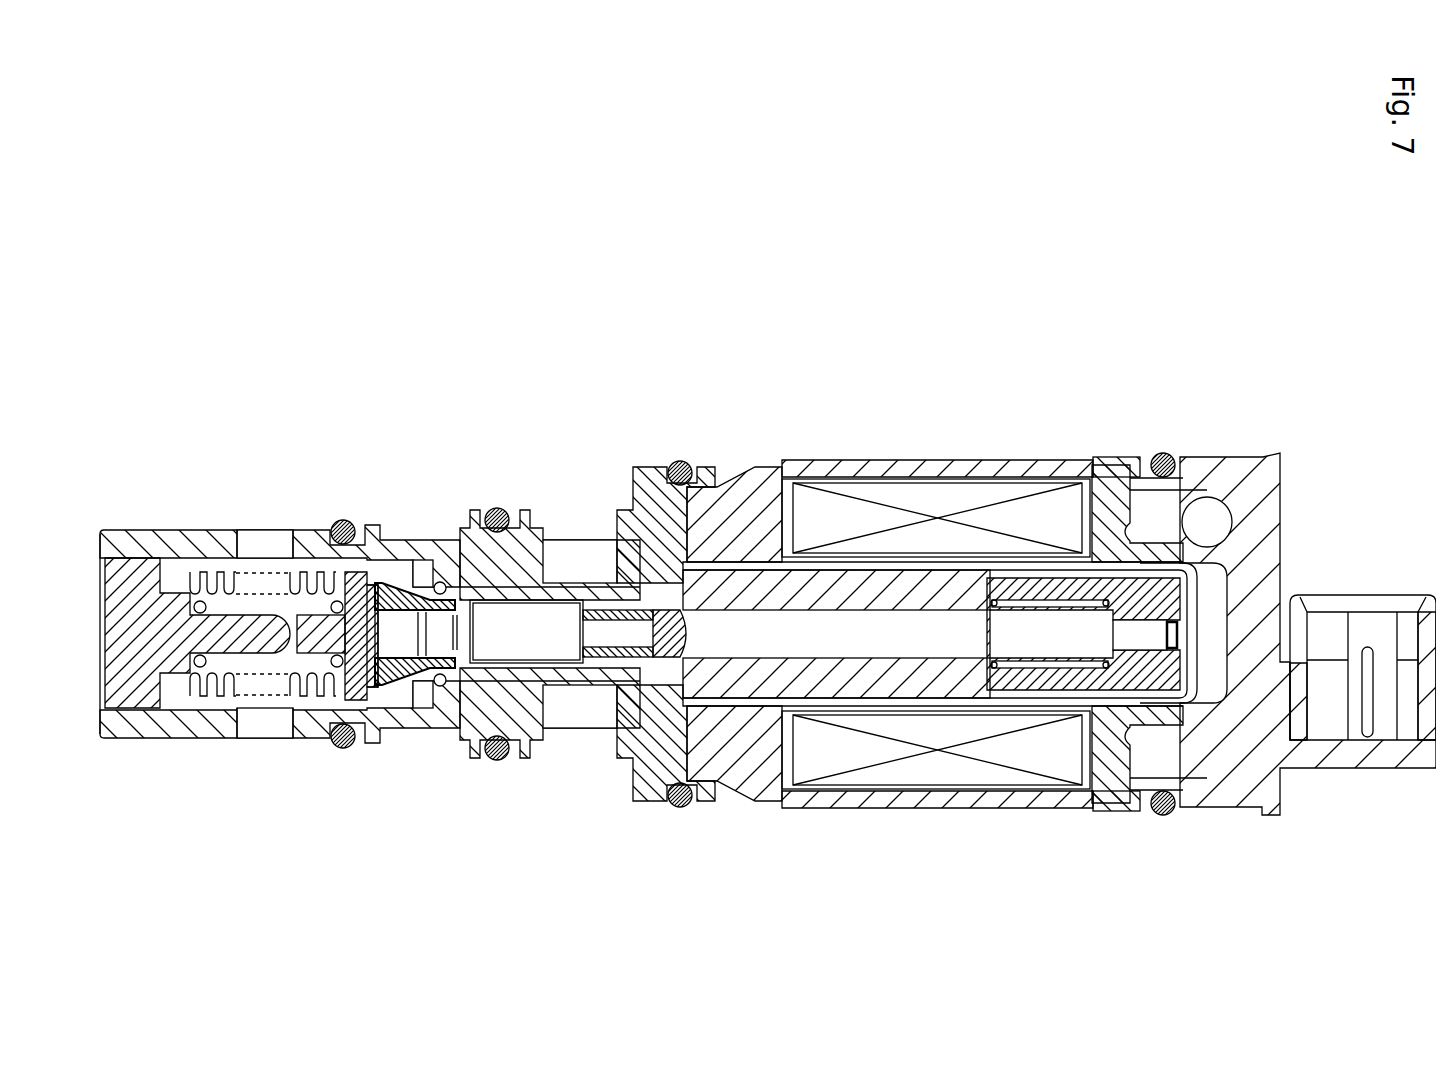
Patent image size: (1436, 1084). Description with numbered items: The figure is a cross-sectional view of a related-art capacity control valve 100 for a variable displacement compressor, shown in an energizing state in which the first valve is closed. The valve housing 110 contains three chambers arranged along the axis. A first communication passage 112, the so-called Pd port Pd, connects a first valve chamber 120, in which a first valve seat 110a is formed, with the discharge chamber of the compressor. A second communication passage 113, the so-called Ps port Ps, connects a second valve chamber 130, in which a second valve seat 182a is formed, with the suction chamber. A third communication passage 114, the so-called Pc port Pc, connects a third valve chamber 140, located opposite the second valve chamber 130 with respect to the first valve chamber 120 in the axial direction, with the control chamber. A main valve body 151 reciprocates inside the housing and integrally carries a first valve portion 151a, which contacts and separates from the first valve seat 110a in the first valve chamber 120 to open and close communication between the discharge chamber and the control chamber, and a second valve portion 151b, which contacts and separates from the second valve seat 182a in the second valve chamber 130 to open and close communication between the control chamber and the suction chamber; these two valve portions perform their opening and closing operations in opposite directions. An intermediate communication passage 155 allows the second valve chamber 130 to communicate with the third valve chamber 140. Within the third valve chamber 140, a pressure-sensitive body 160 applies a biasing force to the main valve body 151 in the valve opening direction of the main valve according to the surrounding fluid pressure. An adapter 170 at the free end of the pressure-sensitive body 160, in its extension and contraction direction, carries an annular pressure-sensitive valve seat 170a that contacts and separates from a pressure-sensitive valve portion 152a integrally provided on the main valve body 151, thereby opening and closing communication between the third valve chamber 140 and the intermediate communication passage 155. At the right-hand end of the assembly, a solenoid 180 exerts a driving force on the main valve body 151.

The capacity control valve 100 is at (1243, 262).
The valve housing 110 is at (108, 522).
The first valve seat 110a is at (420, 588).
The first communication passage 112 is at (442, 558).
The second communication passage 113 is at (560, 600).
The third communication passage 114 is at (252, 556).
The first valve chamber 120 is at (437, 590).
The second valve chamber 130 is at (592, 600).
The third valve chamber 140 is at (206, 570).
The main valve body 151 is at (508, 757).
The first valve portion 151a is at (370, 588).
The second valve portion 151b is at (630, 600).
The pressure-sensitive valve portion 152a is at (348, 704).
The intermediate communication passage 155 is at (447, 702).
The pressure-sensitive body 160 is at (207, 712).
The adapter 170 is at (333, 745).
The annular pressure-sensitive valve seat 170a is at (423, 640).
The solenoid 180 is at (1055, 435).
The second valve seat 182a is at (657, 557).
The Pc port Pc is at (265, 530).
The Pd port Pd is at (440, 560).
The Ps port Ps is at (583, 540).